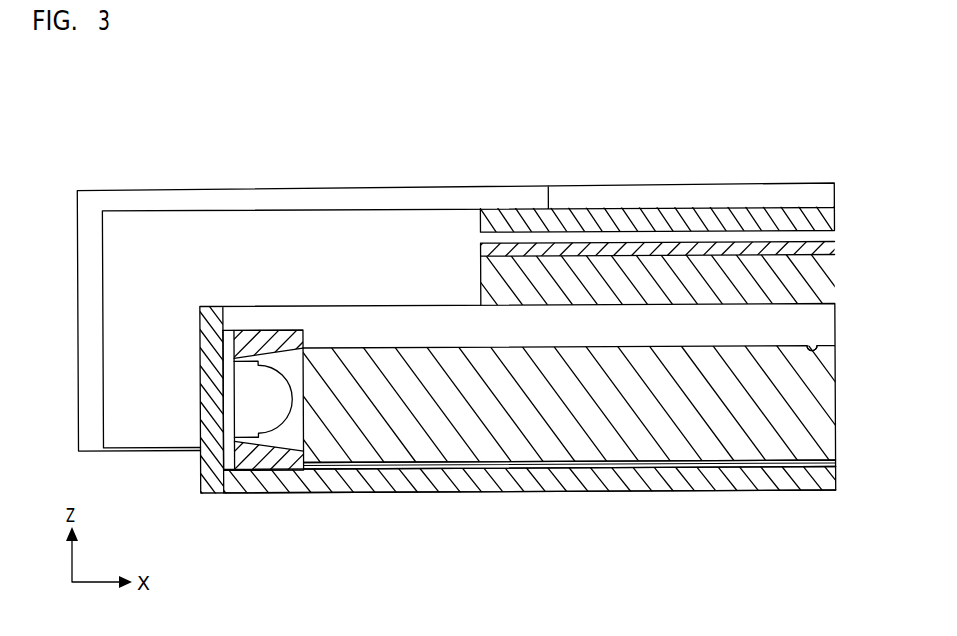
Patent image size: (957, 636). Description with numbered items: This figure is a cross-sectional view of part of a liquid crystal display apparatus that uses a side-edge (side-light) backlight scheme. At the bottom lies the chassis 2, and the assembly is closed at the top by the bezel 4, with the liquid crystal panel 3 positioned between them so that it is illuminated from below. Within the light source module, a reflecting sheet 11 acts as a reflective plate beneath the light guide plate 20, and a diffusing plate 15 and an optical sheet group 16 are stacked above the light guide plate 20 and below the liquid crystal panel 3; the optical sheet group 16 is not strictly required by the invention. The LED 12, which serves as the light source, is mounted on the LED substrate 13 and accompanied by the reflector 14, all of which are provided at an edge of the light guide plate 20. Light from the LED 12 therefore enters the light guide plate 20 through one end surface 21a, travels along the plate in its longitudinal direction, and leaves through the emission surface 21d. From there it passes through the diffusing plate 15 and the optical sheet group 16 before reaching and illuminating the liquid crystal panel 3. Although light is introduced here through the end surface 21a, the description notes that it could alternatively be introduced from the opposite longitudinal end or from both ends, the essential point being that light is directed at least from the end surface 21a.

The chassis 2 is at (836, 484).
The liquid crystal panel 3 is at (836, 219).
The bezel 4 is at (115, 189).
The reflecting sheet 11 is at (838, 465).
The LED 12 is at (247, 425).
The LED substrate 13 is at (230, 463).
The reflector 14 is at (262, 463).
The diffusing plate 15 is at (836, 289).
The optical sheet group 16 is at (836, 249).
The light guide plate 20 is at (836, 411).
The end surface 21a is at (301, 436).
The emission surface 21d is at (814, 350).